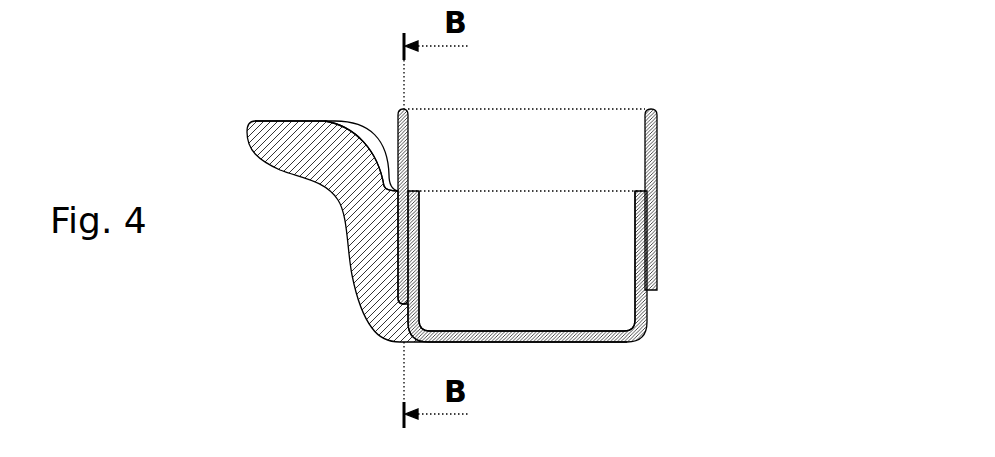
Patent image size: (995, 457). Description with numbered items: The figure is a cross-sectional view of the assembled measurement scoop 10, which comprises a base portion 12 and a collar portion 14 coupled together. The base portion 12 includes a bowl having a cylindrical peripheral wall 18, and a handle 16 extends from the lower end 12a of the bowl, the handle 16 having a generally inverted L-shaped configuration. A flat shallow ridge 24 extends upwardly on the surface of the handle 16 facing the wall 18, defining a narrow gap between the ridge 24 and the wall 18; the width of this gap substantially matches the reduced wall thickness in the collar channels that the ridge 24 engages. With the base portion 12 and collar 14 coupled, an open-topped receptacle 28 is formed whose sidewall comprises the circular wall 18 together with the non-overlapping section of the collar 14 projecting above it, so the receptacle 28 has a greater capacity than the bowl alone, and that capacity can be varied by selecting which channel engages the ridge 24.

The measurement scoop 10 is at (170, 124).
The base portion 12 is at (365, 263).
The lower end of the bowl 12a is at (602, 364).
The collar portion 14 is at (650, 147).
The handle 16 is at (282, 133).
The cylindrical peripheral wall 18 is at (640, 310).
The flat shallow ridge 24 is at (388, 217).
The open-topped receptacle 28 is at (543, 231).